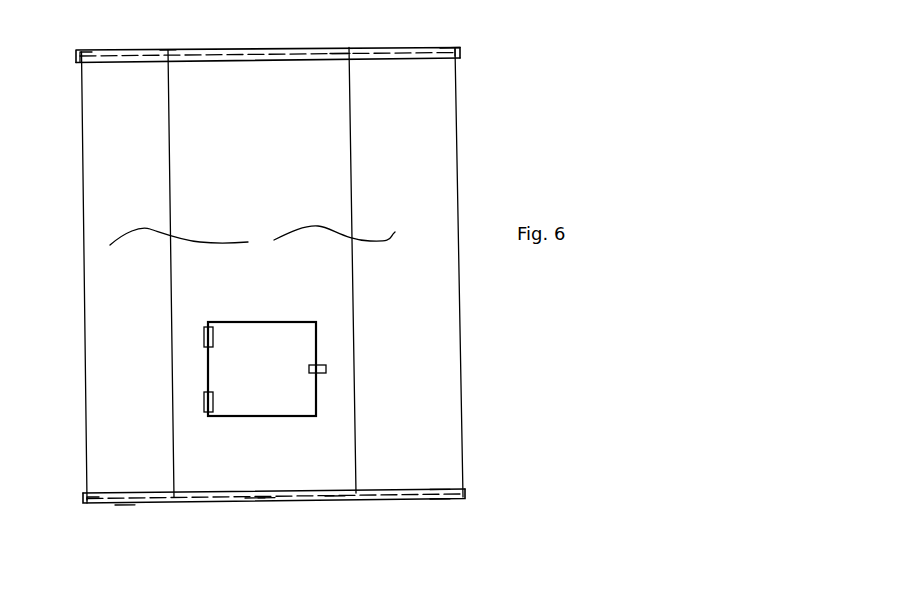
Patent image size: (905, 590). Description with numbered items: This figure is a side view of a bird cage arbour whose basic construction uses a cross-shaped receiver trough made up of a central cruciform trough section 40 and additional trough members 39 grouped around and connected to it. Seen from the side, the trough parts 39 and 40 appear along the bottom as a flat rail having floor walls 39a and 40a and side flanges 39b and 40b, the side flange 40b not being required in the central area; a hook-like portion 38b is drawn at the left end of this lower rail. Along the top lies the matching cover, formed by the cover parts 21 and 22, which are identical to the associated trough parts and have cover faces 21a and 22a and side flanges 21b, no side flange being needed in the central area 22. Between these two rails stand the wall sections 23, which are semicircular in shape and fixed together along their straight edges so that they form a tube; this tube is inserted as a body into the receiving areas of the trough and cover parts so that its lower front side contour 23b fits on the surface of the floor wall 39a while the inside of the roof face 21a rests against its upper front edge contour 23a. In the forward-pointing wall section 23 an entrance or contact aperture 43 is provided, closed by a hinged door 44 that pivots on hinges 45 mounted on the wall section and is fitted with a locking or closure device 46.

The cover part 21 is at (127, 49).
The cover face 21a is at (166, 48).
The side flange 21b is at (93, 57).
The cover part 22 is at (222, 46).
The cover face 22a is at (339, 45).
The wall section 23 is at (270, 200).
The upper front edge 23a is at (407, 63).
The lower front edge 23b is at (402, 492).
The lower rail hook 38b is at (97, 495).
The trough member 39 is at (102, 508).
The floor wall 39a is at (125, 506).
The side flange 39b is at (255, 501).
The cruciform trough section 40 is at (274, 522).
The floor wall 40a is at (357, 523).
The side flange 40b is at (283, 524).
The entrance aperture 43 is at (301, 320).
The hinged door 44 is at (305, 350).
The hinges 45 is at (204, 400).
The locking device 46 is at (326, 367).